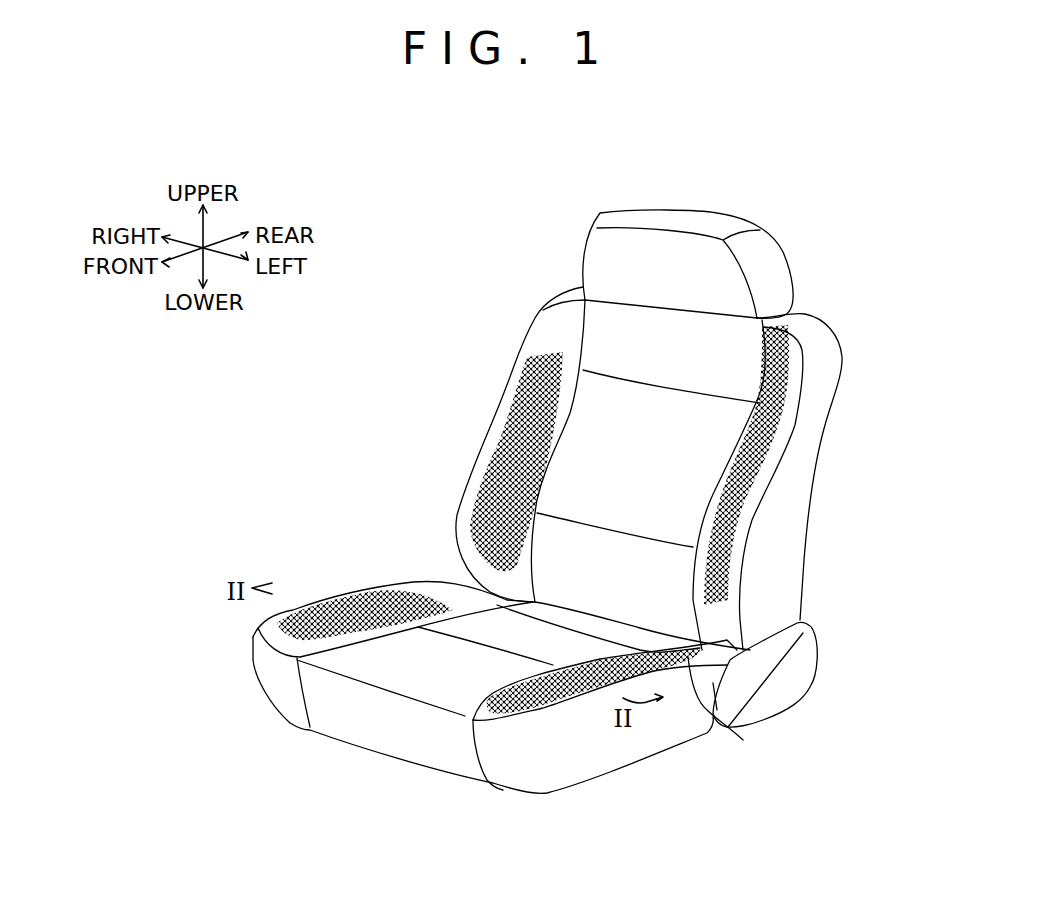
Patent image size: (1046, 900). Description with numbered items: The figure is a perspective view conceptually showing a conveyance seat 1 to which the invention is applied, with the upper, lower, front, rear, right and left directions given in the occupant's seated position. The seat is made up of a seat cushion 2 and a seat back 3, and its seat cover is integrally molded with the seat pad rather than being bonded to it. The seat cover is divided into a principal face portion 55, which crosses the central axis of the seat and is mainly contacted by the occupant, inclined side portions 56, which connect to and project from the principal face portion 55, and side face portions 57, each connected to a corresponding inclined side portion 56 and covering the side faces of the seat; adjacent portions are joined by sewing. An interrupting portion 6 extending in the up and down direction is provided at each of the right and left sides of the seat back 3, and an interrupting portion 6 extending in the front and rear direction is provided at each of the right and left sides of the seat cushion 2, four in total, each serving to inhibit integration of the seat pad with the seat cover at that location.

The conveyance seat 1 is at (844, 231).
The seat cushion 2 is at (353, 712).
The seat back 3 is at (820, 398).
The interrupting portion 6 is at (505, 448).
The principal face portion 55 is at (727, 353).
The inclined side portion 56 is at (560, 334).
The side face portion 57 is at (783, 518).